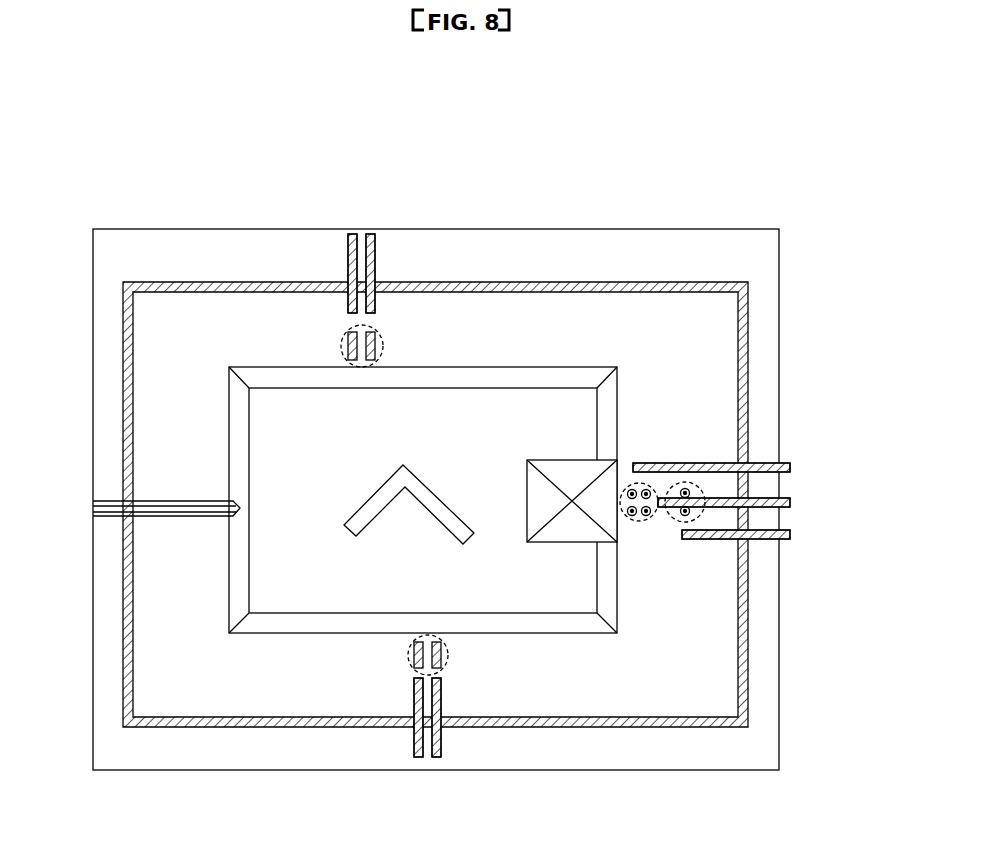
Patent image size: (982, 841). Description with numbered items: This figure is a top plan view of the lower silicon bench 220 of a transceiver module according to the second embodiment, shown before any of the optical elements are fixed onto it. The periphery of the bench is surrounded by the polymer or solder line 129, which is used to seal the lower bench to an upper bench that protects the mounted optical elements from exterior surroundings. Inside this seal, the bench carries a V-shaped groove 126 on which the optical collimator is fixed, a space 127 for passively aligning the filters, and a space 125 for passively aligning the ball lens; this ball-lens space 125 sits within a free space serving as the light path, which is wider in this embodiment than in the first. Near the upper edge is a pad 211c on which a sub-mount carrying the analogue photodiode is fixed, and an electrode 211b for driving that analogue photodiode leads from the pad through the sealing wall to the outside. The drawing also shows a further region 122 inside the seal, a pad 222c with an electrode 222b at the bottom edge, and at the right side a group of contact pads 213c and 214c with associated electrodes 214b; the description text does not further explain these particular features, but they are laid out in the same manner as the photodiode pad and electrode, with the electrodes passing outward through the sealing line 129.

The lower silicon bench 220 is at (735, 118).
The polymer or solder line 129 is at (128, 628).
The V-shaped groove 126 is at (160, 518).
The inner case 122 is at (270, 553).
The space for passively aligning the filters 127 is at (380, 488).
The space for passively aligning the ball lens 125 is at (587, 537).
The electrode 211b is at (370, 234).
The pad 211c is at (383, 343).
The lower terminal pins 222b is at (420, 757).
The lower pin cross-section 222c is at (408, 650).
The side terminal pins 214b is at (790, 467).
The side pin cross-section 214c is at (685, 482).
The pin cross-section 213c is at (639, 521).